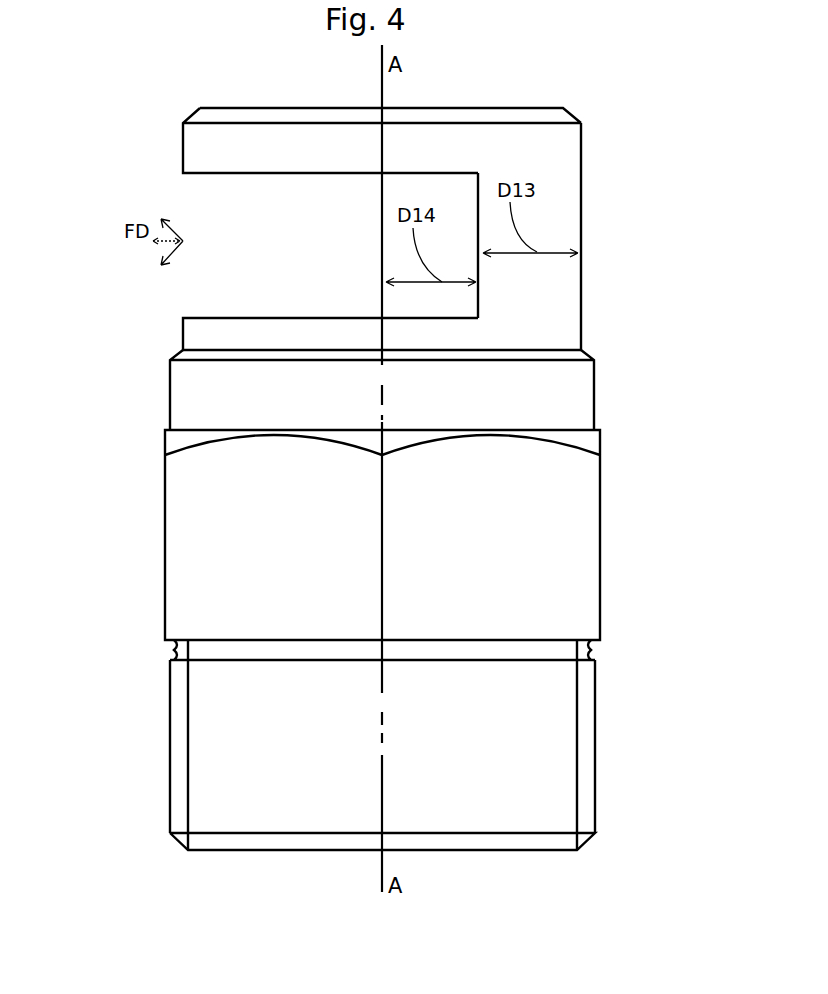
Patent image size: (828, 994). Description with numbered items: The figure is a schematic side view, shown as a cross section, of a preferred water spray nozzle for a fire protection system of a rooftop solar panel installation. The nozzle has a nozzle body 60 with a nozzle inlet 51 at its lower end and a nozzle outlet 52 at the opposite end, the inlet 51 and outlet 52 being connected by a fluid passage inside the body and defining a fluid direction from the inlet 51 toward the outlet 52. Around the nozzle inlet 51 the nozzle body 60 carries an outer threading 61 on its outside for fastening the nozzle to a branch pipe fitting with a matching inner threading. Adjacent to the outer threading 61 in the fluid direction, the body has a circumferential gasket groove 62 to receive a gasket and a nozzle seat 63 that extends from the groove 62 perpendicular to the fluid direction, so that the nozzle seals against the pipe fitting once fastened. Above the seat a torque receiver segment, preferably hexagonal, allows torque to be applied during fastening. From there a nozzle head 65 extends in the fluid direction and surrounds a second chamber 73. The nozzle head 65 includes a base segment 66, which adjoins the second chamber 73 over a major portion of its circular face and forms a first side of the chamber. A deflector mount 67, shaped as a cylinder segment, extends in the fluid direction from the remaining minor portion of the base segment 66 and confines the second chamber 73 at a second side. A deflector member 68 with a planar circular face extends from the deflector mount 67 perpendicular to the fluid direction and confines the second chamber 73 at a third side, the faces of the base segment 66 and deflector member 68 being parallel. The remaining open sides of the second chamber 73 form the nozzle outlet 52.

The nozzle body 60 is at (100, 105).
The nozzle outlet 52 is at (185, 207).
The nozzle head 65 is at (645, 100).
The deflector member 68 is at (588, 108).
The deflector mount 67 is at (590, 182).
The second chamber 73 is at (308, 270).
The base segment 66 is at (166, 318).
The gasket groove 62 is at (600, 532).
The nozzle seat 63 is at (590, 650).
The outer threading 61 is at (583, 738).
The nozzle inlet 51 is at (340, 863).